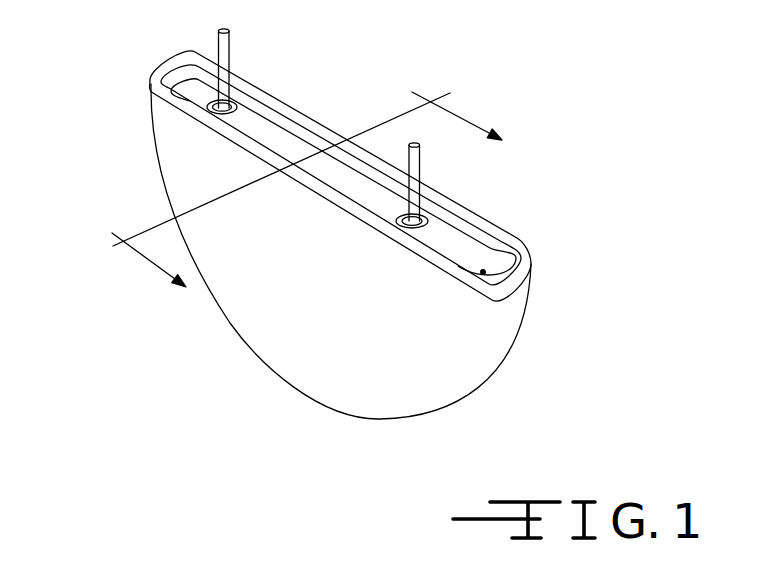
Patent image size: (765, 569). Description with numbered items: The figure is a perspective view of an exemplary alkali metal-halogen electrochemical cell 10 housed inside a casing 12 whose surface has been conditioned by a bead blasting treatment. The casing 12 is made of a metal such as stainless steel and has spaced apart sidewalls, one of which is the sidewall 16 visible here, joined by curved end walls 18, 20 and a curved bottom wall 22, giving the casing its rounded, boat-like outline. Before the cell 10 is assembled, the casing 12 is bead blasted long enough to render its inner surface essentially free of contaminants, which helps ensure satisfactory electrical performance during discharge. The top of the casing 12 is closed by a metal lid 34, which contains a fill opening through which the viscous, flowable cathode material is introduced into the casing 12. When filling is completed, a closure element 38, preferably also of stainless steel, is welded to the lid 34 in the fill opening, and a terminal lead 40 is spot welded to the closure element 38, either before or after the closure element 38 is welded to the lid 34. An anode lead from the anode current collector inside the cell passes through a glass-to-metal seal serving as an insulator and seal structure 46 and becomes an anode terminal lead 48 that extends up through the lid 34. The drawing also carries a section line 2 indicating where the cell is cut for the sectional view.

The alkali metal-halogen electrochemical cell 10 is at (319, 235).
The casing 12 is at (319, 271).
The sidewall 16 is at (262, 302).
The curved end wall 18 is at (529, 300).
The curved end wall 20 is at (161, 167).
The curved bottom wall 22 is at (287, 388).
The lid 34 is at (480, 226).
The closure element 38 is at (240, 100).
The terminal lead 40 is at (230, 42).
The insulator and seal structure 46 is at (457, 247).
The anode terminal lead 48 is at (421, 168).
The section line 2- 2 is at (318, 204).